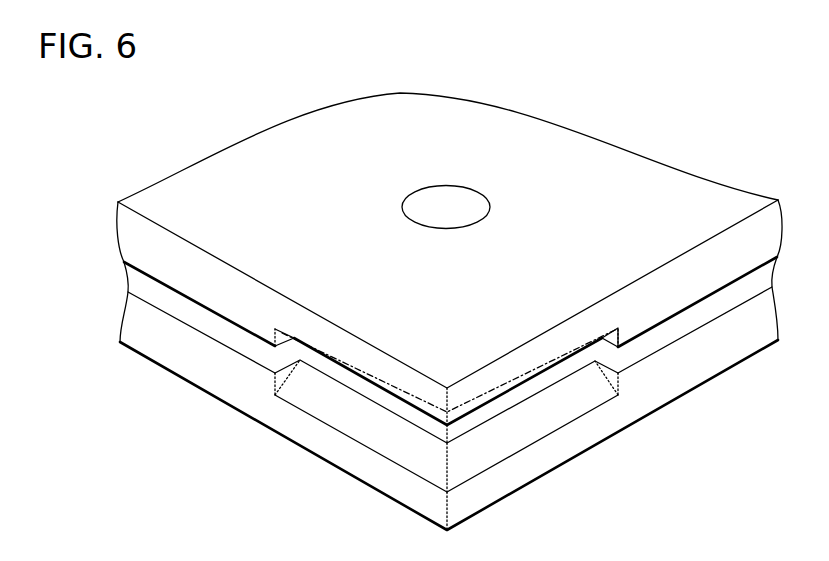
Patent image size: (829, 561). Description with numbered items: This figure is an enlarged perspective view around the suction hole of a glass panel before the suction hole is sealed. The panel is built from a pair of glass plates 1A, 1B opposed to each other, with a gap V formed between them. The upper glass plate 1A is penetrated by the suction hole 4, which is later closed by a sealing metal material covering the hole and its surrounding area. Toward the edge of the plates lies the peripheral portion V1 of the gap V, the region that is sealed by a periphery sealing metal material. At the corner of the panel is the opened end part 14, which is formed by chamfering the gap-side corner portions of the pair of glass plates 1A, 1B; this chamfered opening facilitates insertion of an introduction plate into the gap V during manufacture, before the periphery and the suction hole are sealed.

The glass plate 1A is at (452, 259).
The glass plate 1B is at (449, 393).
The suction hole 4 is at (465, 207).
The opened end part 14 is at (557, 408).
The gap V is at (697, 317).
The peripheral portion V1 is at (703, 230).